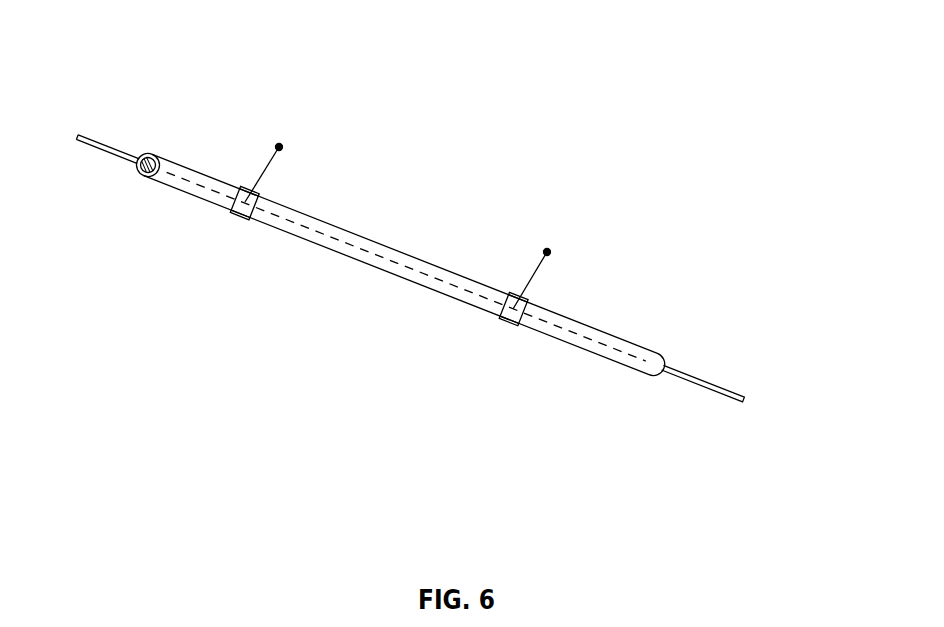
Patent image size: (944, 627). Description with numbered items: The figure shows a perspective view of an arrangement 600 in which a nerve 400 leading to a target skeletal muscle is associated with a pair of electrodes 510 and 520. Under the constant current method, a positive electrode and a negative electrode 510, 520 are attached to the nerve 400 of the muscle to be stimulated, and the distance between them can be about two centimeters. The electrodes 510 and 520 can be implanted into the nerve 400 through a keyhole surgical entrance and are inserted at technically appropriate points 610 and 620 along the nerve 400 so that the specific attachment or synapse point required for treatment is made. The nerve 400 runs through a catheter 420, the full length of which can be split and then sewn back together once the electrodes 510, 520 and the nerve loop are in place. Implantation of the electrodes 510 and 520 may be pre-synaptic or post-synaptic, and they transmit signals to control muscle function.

The sensor assembly 600 is at (604, 93).
The catheter 420 is at (380, 243).
The nerve 400 is at (699, 378).
The electrode 510 is at (281, 143).
The electrode 520 is at (549, 248).
The point 610 is at (260, 194).
The point 620 is at (526, 303).